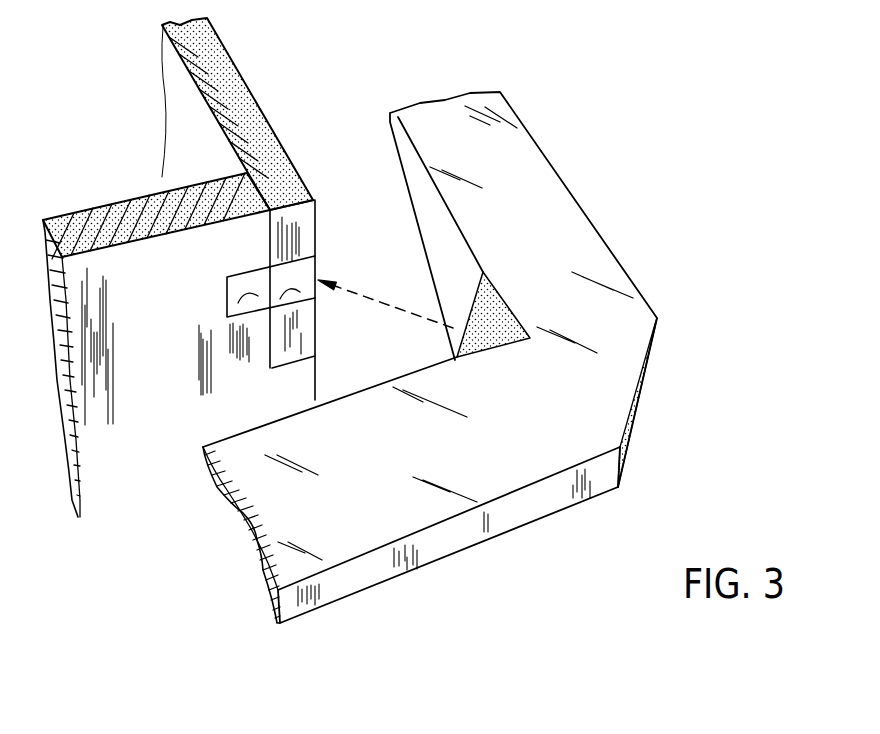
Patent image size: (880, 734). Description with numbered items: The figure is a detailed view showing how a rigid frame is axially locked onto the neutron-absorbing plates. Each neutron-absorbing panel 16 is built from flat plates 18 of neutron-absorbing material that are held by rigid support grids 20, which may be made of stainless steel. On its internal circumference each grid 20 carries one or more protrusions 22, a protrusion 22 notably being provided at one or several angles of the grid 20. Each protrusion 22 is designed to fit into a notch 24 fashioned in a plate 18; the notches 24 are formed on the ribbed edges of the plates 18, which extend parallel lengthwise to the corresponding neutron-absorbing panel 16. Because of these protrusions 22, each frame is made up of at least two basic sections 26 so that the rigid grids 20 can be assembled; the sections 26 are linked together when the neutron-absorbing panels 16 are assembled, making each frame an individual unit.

The neutron-absorbing panel 16 is at (266, 82).
The flat plate 18 is at (143, 200).
The support grid 20 is at (558, 150).
The protrusion 22 is at (470, 303).
The notch 24 is at (250, 275).
The basic section 26 is at (612, 272).